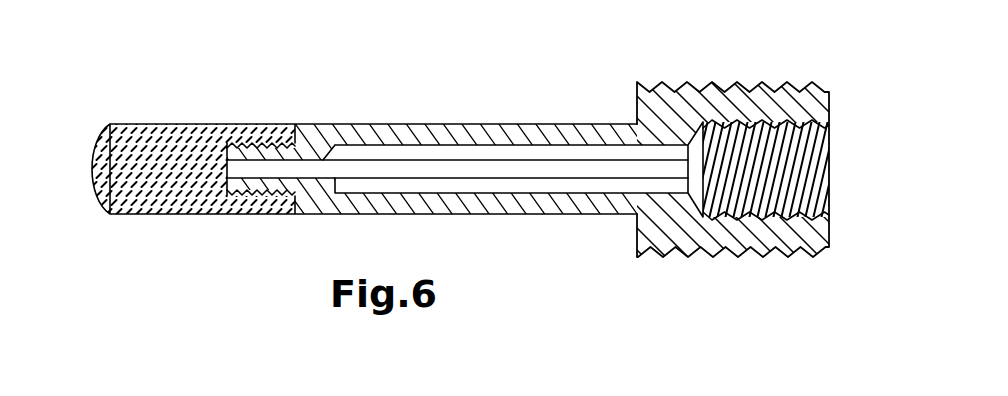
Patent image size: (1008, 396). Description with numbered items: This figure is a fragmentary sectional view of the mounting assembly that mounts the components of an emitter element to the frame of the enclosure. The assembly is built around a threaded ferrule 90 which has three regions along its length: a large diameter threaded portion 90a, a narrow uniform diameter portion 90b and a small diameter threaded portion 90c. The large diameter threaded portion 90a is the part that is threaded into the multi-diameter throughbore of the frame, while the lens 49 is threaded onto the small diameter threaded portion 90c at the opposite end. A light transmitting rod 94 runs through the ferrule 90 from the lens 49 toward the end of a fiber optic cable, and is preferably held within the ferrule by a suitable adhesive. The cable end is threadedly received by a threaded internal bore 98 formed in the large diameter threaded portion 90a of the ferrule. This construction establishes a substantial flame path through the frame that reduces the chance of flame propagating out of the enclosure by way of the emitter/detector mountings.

The lens 49 is at (177, 147).
The threaded ferrule 90 is at (604, 132).
The large diameter threaded portion 90a is at (736, 88).
The narrow uniform diameter portion 90b is at (502, 138).
The small diameter threaded portion 90c is at (262, 146).
The light transmitting rod 94 is at (407, 170).
The threaded internal bore 98 is at (808, 218).